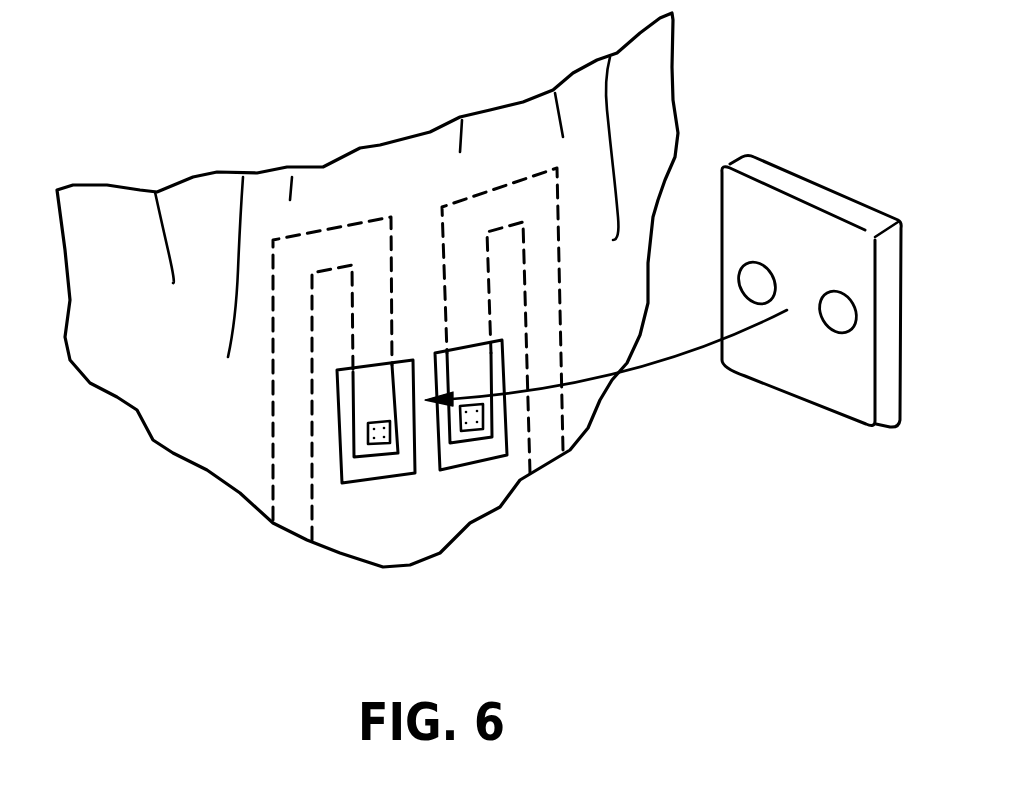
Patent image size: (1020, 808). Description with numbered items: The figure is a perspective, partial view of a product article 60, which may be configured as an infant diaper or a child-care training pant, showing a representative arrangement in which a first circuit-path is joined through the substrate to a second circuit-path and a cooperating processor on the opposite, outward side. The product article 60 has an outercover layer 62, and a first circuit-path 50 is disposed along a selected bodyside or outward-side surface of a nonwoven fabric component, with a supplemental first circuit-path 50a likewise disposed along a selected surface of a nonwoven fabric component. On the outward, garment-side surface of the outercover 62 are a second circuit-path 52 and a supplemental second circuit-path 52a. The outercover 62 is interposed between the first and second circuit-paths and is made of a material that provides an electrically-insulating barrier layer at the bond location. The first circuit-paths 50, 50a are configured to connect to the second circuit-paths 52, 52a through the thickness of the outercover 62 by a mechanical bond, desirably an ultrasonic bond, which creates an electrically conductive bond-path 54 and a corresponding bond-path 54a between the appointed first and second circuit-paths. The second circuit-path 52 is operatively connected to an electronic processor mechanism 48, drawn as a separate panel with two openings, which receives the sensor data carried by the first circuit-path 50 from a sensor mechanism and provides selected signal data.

The electronic processor mechanism 48 is at (813, 193).
The first circuit-path 50 is at (540, 272).
The supplemental first circuit-path 50a is at (297, 380).
The second circuit-path 52 is at (450, 465).
The supplemental second circuit-path 52a is at (403, 467).
The electrically conductive bond-path 54 is at (477, 430).
The electrically conductive bond-path 54a is at (382, 445).
The product article 60 is at (280, 160).
The outercover layer 62 is at (143, 380).